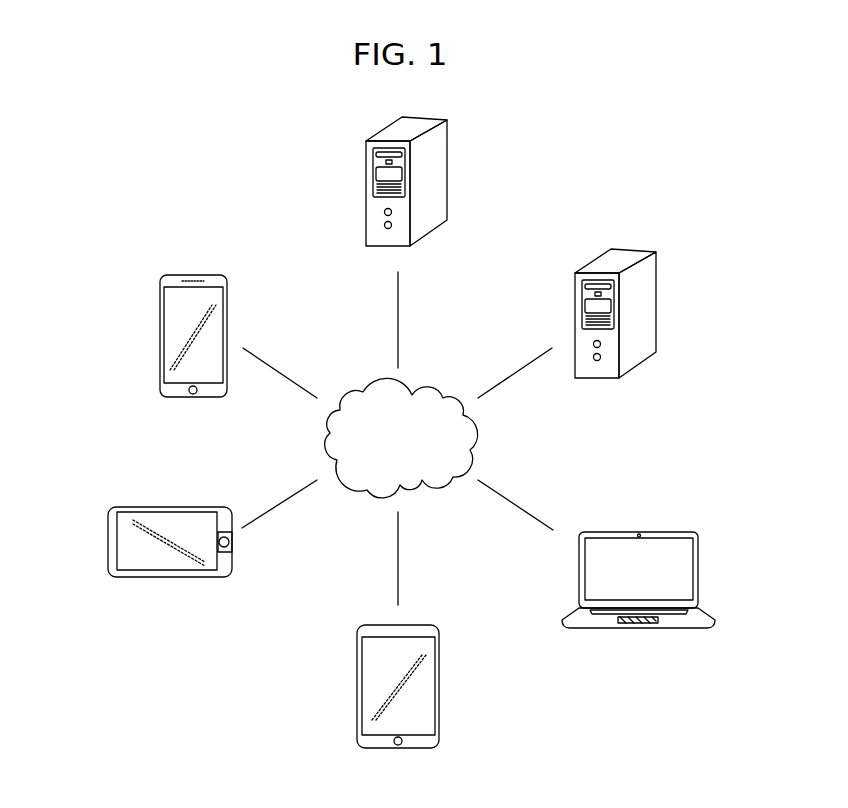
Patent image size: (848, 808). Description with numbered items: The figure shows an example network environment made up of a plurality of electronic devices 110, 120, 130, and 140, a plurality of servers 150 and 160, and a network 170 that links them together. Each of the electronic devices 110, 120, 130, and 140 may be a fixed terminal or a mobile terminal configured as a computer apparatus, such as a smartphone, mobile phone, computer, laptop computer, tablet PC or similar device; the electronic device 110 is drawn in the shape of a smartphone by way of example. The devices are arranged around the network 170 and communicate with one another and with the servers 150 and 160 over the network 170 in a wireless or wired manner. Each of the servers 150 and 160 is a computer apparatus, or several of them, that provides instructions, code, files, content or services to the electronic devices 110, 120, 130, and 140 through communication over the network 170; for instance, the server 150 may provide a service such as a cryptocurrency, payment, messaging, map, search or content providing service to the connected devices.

The electronic device 110 is at (160, 336).
The electronic device 120 is at (108, 540).
The electronic device 130 is at (439, 687).
The electronic device 140 is at (698, 572).
The server 150 is at (657, 300).
The server 160 is at (450, 168).
The network 170 is at (420, 389).